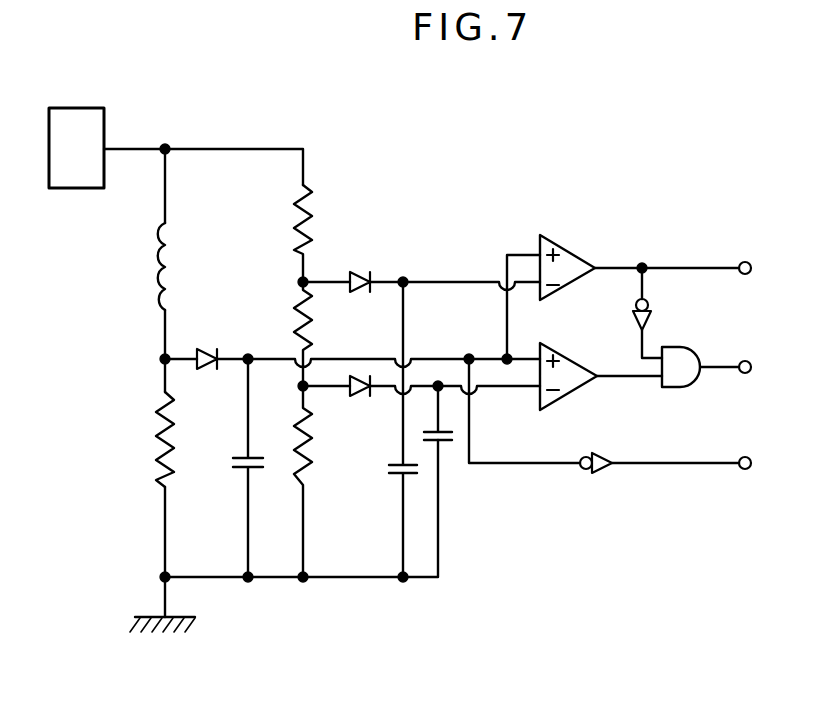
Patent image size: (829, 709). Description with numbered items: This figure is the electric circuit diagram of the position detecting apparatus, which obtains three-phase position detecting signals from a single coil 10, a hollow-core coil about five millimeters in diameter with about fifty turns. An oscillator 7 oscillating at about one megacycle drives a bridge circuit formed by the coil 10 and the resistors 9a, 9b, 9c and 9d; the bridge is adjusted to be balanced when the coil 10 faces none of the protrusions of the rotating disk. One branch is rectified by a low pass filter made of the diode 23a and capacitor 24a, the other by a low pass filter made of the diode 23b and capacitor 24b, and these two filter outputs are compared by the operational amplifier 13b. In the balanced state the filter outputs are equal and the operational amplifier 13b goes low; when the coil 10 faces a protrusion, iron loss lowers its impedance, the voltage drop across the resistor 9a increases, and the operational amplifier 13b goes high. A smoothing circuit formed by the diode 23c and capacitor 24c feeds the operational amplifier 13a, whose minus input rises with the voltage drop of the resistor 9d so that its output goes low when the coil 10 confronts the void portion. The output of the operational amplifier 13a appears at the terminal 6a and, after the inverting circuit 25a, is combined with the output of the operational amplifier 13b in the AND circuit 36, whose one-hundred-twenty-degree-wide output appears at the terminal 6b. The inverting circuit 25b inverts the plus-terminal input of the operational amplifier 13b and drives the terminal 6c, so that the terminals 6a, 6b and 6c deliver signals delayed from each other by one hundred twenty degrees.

The oscillator 7 is at (100, 108).
The coil 10 is at (158, 272).
The resistor 9a is at (160, 426).
The resistor 9b is at (308, 452).
The resistor 9c is at (310, 214).
The resistor 9d is at (310, 318).
The diode 23a is at (205, 369).
The diode 23b is at (356, 390).
The diode 23c is at (360, 272).
The capacitor 24a is at (232, 464).
The capacitor 24b is at (452, 440).
The capacitor 24c is at (390, 470).
The operational amplifier 13a is at (566, 252).
The operational amplifier 13b is at (566, 360).
The inverting circuit 25a is at (651, 312).
The inverting circuit 25b is at (602, 470).
The AND circuit 36 is at (697, 350).
The terminal 6a is at (750, 262).
The terminal 6b is at (750, 361).
The terminal 6c is at (750, 458).